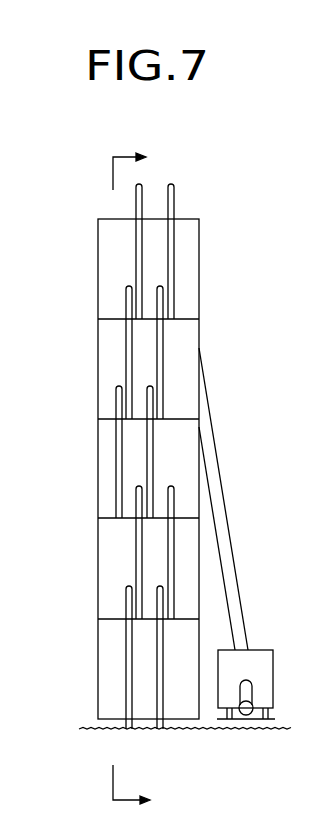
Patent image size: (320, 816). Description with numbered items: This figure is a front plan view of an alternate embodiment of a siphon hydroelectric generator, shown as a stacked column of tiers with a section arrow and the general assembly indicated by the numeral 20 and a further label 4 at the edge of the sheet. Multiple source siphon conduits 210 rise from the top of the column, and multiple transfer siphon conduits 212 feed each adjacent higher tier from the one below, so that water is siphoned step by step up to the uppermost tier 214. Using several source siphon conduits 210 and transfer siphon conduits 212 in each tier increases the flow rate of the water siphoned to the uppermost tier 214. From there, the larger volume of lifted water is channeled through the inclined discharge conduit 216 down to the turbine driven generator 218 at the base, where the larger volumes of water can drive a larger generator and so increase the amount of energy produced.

The assembly 20 is at (233, 290).
The reference (partially shown) 4 is at (314, 325).
The source siphon conduits 210 is at (175, 199).
The transfer siphon conduits 212 is at (126, 350).
The uppermost tier 214 is at (98, 247).
The discharge conduit 216 is at (222, 490).
The turbine driven generator 218 is at (258, 650).